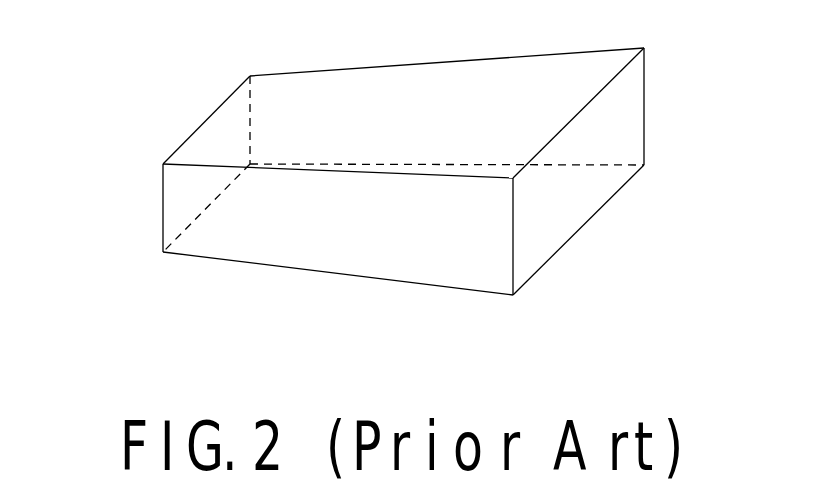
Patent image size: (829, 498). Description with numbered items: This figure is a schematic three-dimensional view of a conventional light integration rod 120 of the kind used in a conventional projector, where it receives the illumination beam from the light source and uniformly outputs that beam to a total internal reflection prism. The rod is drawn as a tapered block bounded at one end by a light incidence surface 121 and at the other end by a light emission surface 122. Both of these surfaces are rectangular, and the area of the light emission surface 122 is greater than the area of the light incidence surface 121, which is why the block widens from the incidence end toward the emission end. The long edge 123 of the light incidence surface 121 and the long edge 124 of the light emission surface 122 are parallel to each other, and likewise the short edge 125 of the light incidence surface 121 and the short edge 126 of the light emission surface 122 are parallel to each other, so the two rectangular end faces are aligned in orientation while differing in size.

The light integration rod 120 is at (278, 265).
The light incidence surface 121 is at (181, 135).
The light emission surface 122 is at (572, 201).
The long edge of the light incidence surface 123 is at (225, 100).
The long edge of the light emission surface 124 is at (613, 81).
The short edge of the light incidence surface 125 is at (163, 208).
The short edge of the light emission surface 126 is at (513, 258).